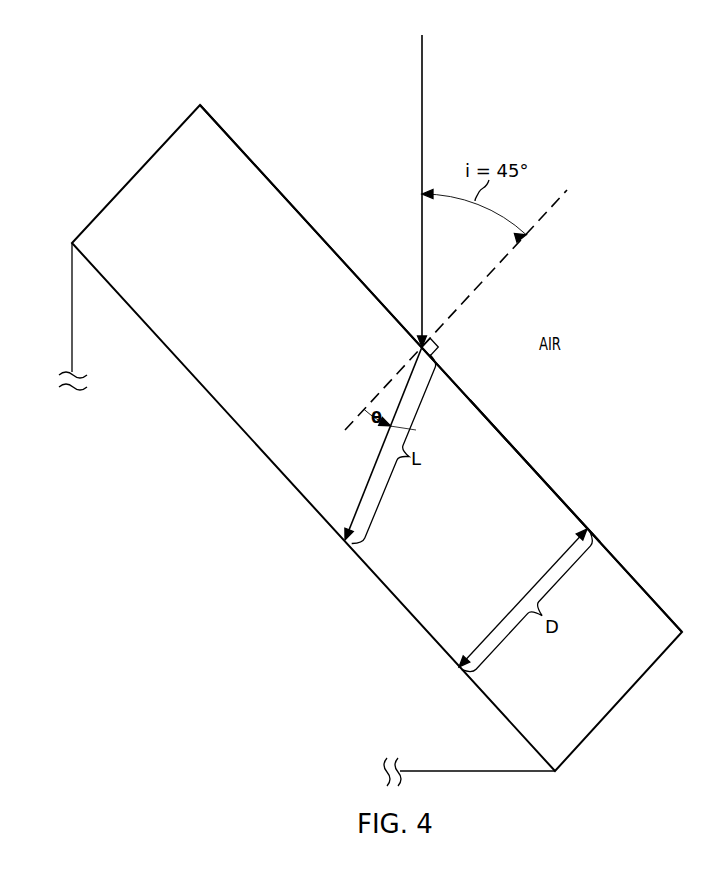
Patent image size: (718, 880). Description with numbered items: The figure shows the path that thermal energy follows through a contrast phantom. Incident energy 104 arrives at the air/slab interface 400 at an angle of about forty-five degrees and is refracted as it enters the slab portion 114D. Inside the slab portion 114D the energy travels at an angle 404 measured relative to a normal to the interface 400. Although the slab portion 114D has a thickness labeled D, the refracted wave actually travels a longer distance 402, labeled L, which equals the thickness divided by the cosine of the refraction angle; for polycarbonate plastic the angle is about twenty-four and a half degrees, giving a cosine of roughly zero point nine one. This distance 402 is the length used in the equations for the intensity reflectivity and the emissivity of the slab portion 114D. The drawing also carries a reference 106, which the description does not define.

The incident energy 104 is at (422, 121).
The optical medium / substrate 106 is at (161, 477).
The slab portion 114D is at (231, 160).
The air/slab interface 400 is at (539, 474).
The distance 402 is at (372, 471).
The angle 404 is at (365, 404).